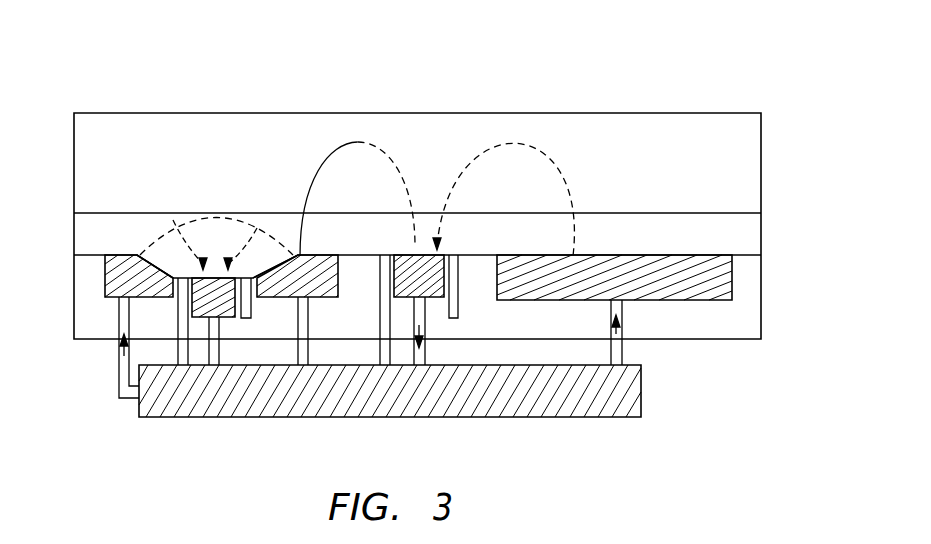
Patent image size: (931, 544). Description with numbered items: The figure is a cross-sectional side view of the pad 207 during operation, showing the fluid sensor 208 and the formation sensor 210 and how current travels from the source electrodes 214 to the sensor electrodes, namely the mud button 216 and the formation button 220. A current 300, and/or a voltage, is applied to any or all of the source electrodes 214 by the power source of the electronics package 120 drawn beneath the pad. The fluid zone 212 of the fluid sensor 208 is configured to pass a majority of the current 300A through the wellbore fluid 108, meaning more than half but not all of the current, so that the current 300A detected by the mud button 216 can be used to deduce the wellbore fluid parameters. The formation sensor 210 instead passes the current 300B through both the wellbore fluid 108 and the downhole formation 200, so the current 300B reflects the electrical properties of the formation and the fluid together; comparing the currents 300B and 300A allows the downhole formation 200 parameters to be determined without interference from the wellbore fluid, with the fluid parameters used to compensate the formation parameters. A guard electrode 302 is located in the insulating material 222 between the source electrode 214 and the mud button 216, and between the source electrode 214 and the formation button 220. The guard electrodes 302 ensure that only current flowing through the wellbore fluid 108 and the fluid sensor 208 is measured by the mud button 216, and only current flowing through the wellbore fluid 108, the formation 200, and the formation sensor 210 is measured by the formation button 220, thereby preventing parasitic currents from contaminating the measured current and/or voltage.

The downhole formation 200 is at (761, 185).
The wellbore fluid 108 is at (761, 238).
The fluid zone 212 is at (147, 243).
The source electrodes 214 is at (105, 270).
The formation button 220 is at (419, 250).
The fluid sensor 208 is at (214, 241).
The current 300A is at (173, 220).
The current 300B is at (346, 146).
The formation sensor 210 is at (476, 234).
The current 300 is at (118, 322).
The guard electrode 302 is at (178, 331).
The mud button 216 is at (220, 322).
The insulating material 222 is at (374, 284).
The pad 207 is at (494, 324).
The electronics package 120 is at (641, 390).